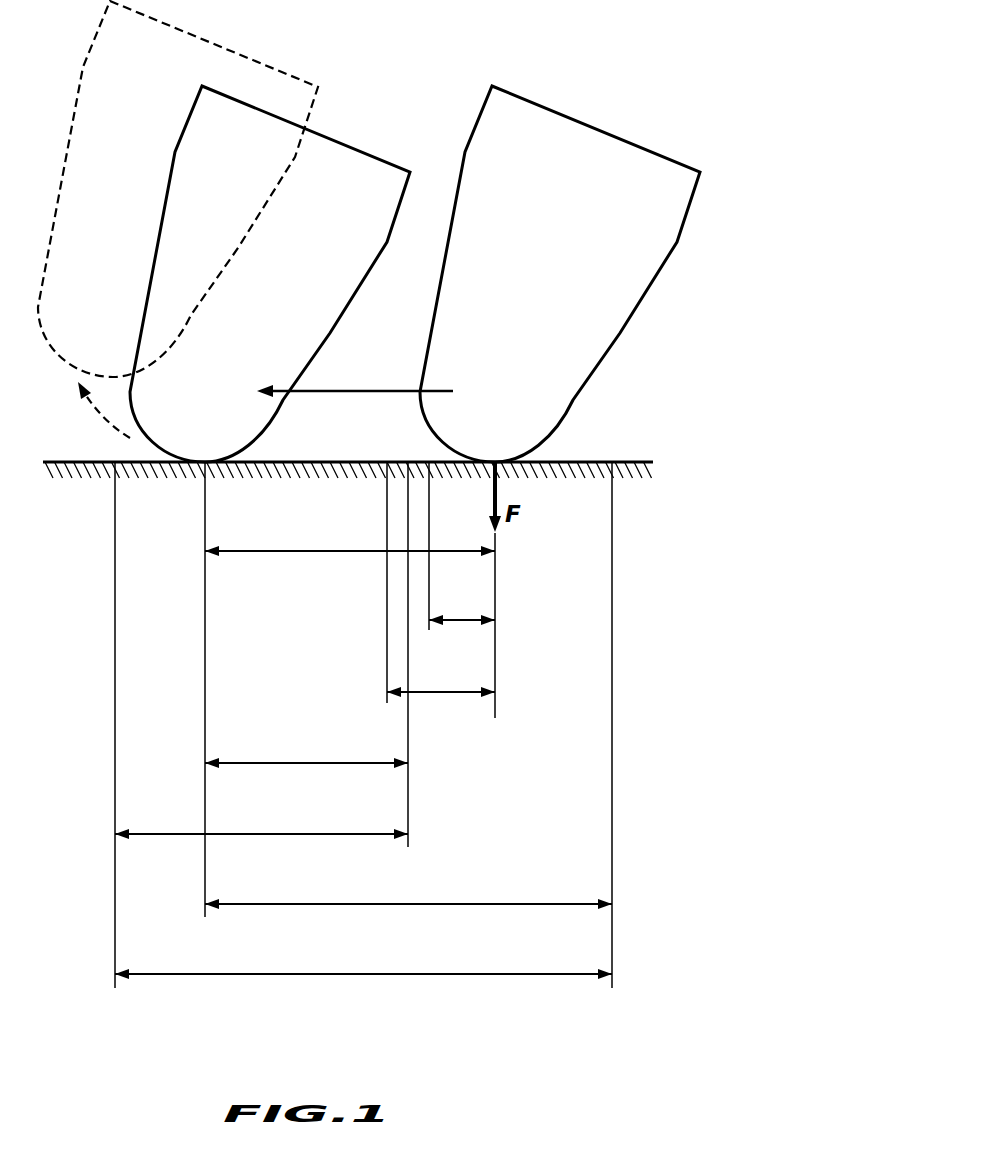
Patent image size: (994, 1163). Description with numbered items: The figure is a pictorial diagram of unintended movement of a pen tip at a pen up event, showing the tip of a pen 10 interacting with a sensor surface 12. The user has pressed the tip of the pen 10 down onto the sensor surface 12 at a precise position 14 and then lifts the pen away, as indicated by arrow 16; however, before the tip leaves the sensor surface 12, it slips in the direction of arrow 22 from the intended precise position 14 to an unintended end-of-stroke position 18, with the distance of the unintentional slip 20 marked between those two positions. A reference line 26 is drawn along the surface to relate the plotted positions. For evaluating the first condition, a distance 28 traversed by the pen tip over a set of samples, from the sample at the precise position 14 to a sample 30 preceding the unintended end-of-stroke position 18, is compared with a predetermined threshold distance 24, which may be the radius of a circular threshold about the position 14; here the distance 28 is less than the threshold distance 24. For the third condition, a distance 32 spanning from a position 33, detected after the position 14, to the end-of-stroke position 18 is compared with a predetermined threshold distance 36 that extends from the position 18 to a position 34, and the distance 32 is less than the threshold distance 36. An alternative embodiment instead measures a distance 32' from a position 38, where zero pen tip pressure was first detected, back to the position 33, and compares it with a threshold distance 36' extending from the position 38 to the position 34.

The pen 10 is at (622, 333).
The sensor surface 12 is at (635, 461).
The precise position 14 is at (497, 585).
The arrow 16 is at (92, 407).
The unintended end-of-stroke position 18 is at (205, 703).
The distance of the unintentional slip 20 is at (283, 552).
The arrow 22 is at (358, 390).
The predetermined threshold distance 24 is at (438, 693).
The reference line 26 is at (387, 672).
The distance 28 is at (467, 623).
The sample 30 is at (430, 590).
The distance 32 is at (306, 783).
The distance 32' is at (261, 852).
The position 33 is at (409, 797).
The position 34 is at (613, 933).
The predetermined threshold distance 36 is at (408, 923).
The threshold distance 36' is at (363, 993).
The position 38 is at (115, 892).